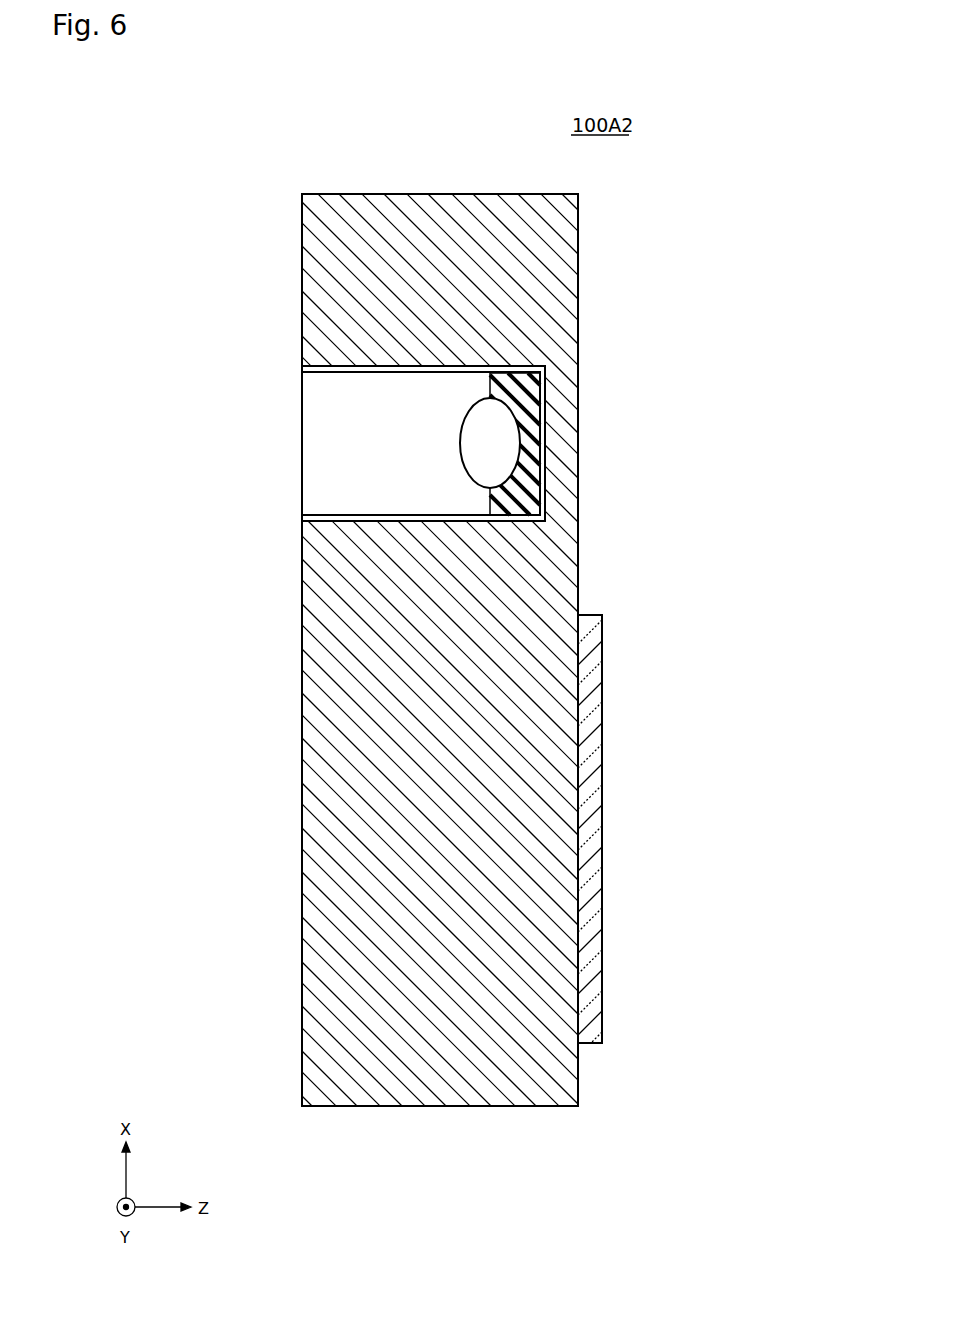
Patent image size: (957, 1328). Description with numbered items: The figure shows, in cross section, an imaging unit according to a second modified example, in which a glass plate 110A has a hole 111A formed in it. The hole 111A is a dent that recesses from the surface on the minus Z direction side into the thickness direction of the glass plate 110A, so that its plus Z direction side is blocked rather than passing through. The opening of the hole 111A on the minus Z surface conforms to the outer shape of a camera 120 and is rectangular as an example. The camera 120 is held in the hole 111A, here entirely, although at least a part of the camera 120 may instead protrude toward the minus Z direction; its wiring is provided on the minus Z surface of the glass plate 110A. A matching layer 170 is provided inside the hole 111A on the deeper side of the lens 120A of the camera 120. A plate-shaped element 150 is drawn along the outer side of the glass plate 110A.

The glass plate 110A is at (427, 1088).
The camera 120 is at (318, 442).
The lens 120A is at (485, 442).
The hole 111A is at (532, 512).
The matching layer 170 is at (528, 459).
The plate electrode 150 is at (590, 851).